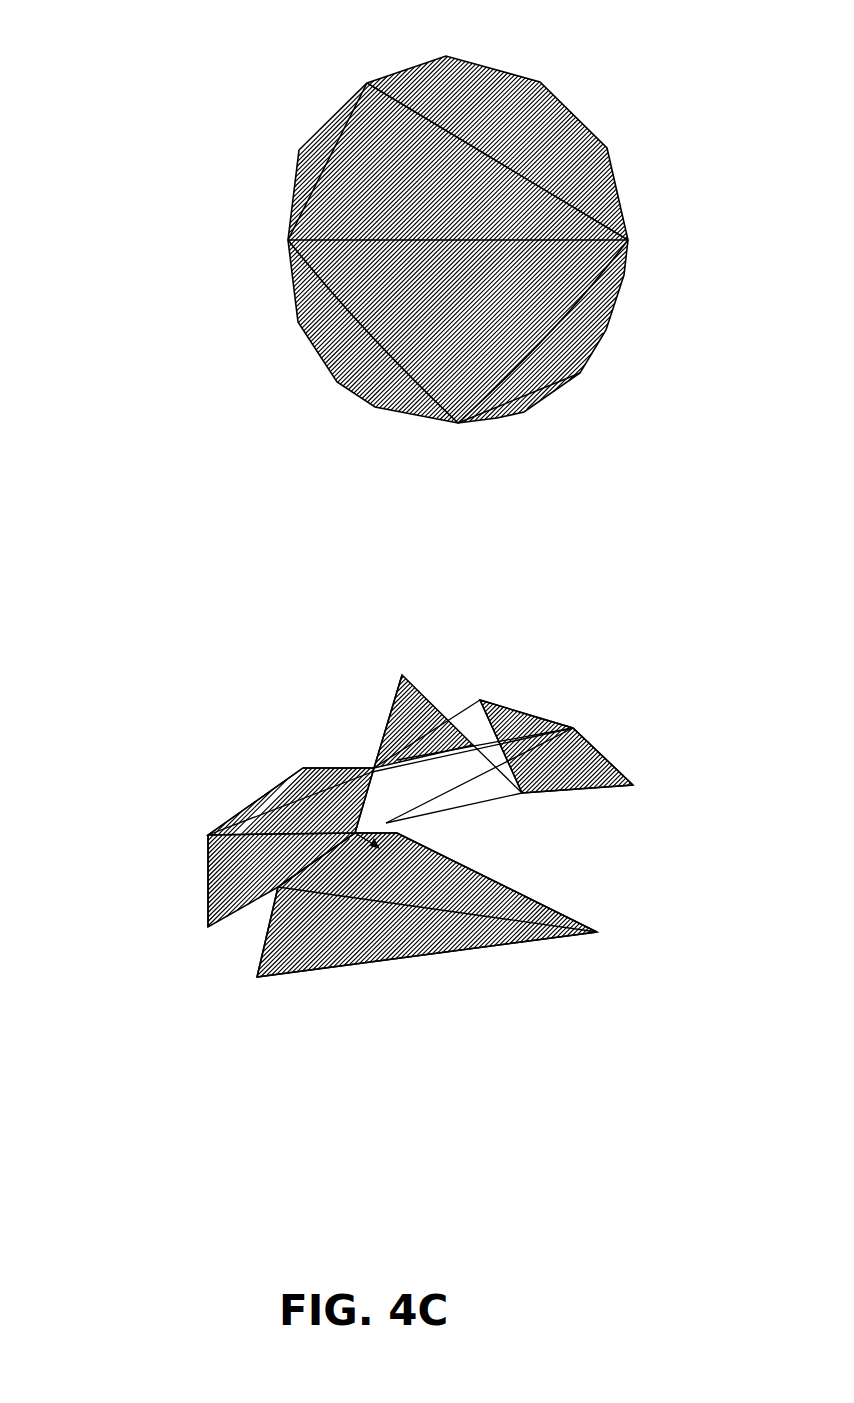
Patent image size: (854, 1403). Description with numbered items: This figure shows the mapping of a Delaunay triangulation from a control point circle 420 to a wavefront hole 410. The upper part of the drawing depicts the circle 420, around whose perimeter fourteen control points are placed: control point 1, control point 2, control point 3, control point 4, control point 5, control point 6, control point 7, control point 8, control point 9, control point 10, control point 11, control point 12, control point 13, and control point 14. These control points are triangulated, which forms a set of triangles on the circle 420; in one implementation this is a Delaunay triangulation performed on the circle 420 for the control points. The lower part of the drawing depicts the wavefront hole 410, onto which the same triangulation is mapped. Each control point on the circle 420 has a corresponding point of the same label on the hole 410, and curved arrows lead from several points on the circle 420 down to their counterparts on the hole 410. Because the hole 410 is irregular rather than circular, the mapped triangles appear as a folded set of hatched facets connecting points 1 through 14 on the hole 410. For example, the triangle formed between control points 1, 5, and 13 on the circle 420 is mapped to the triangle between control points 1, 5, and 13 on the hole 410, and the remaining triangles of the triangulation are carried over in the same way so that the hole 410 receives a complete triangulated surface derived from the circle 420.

The control point 1 is at (192, 770).
The control point 2 is at (300, 690).
The control point 3 is at (392, 740).
The control point 4 is at (470, 692).
The control point 5 is at (563, 680).
The control point 6 is at (589, 565).
The control point 7 is at (543, 607).
The control point 8 is at (456, 598).
The control point 9 is at (410, 644).
The control point 10 is at (480, 673).
The control point 11 is at (454, 676).
The control point 12 is at (255, 651).
The control point 13 is at (291, 565).
The control point 14 is at (235, 539).
The wavefront hole 410 is at (398, 878).
The control point circle 420 is at (282, 218).